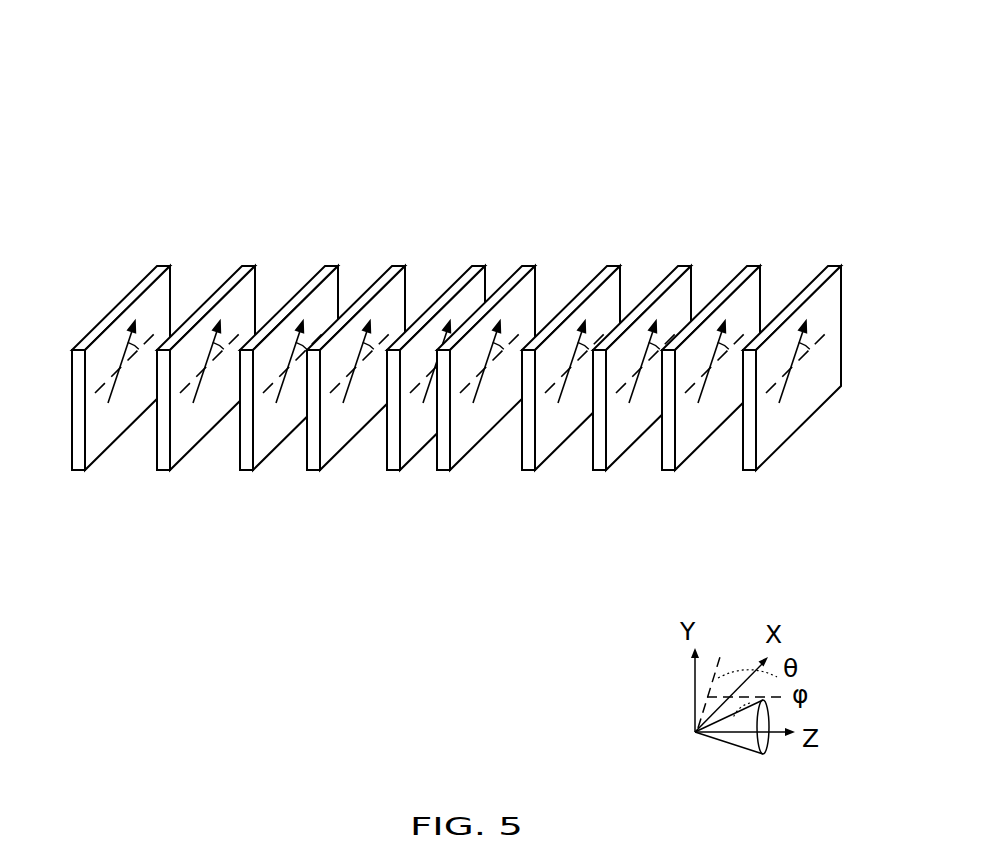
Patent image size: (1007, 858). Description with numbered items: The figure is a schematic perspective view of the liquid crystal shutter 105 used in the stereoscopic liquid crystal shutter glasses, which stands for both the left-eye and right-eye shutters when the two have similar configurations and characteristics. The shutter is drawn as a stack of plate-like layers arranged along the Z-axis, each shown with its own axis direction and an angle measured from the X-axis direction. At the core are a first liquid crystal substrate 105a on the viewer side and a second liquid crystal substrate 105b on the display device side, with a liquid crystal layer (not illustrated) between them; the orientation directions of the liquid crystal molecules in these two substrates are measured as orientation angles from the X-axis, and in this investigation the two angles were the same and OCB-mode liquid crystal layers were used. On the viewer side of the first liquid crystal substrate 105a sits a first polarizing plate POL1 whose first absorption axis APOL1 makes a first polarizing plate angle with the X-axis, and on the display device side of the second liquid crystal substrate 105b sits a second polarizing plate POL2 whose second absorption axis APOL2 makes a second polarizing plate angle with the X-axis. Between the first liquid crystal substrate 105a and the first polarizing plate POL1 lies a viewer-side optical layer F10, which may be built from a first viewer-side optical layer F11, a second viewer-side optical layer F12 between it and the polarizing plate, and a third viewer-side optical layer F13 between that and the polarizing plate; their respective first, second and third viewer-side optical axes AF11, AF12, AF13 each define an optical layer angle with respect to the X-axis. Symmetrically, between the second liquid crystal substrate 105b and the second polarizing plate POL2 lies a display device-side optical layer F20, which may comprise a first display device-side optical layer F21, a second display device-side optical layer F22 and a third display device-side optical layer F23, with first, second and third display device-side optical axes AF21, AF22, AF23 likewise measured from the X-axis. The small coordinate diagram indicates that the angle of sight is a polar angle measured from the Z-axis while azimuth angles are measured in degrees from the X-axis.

The liquid crystal shutter 105 is at (469, 311).
The first liquid crystal substrate 105a is at (493, 360).
The second liquid crystal substrate 105b is at (415, 360).
The first polarizing plate POL1 is at (802, 344).
The second polarizing plate POL2 is at (132, 343).
The viewer-side optical layer F10 is at (643, 362).
The first viewer-side optical layer F11 is at (572, 339).
The second viewer-side optical layer F12 is at (647, 339).
The third viewer-side optical layer F13 is at (719, 339).
The display device-side optical layer F20 is at (290, 363).
The first display device-side optical layer F21 is at (365, 340).
The second display device-side optical layer F22 is at (291, 340).
The third display device-side optical layer F23 is at (215, 340).
The first absorption axis APOL1 is at (806, 326).
The second absorption axis APOL2 is at (135, 326).
The first viewer-side optical axis AF11 is at (585, 326).
The second viewer-side optical axis AF12 is at (656, 326).
The third viewer-side optical axis AF13 is at (725, 326).
The first display device-side optical axis AF21 is at (370, 326).
The second display device-side optical axis AF22 is at (303, 326).
The third display device-side optical axis AF23 is at (220, 326).